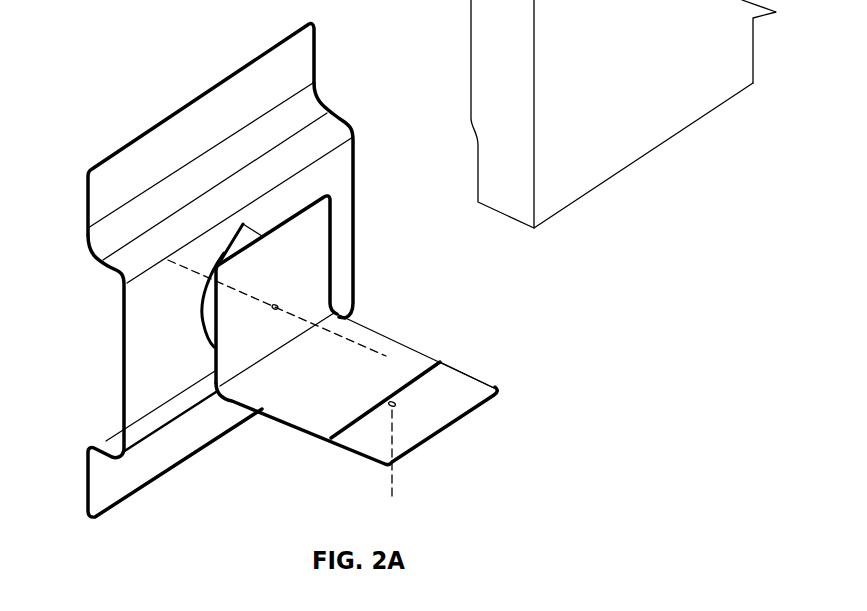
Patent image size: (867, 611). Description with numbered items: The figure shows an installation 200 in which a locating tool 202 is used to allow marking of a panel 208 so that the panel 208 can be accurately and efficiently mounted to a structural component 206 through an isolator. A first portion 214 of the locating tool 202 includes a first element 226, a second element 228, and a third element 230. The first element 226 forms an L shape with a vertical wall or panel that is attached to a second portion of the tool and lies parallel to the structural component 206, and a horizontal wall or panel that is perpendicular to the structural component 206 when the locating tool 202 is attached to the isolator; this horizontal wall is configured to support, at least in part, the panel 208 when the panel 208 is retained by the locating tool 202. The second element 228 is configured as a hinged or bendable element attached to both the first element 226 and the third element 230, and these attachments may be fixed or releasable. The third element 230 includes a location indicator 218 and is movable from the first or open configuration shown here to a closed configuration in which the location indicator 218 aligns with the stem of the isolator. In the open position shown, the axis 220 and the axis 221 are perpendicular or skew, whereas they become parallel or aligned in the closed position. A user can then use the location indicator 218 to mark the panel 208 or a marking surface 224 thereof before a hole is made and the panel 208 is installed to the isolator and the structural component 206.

The installation 200 is at (135, 88).
The locating tool 202 is at (450, 273).
The structural component 206 is at (112, 158).
The panel 208 is at (470, 47).
The first portion 214 is at (397, 353).
The location indicator 218 is at (396, 406).
The axis 220 is at (350, 340).
The axis 221 is at (390, 476).
The marking surface 224 is at (650, 135).
The first element 226 is at (307, 290).
The second element 228 is at (348, 409).
The third element 230 is at (469, 409).